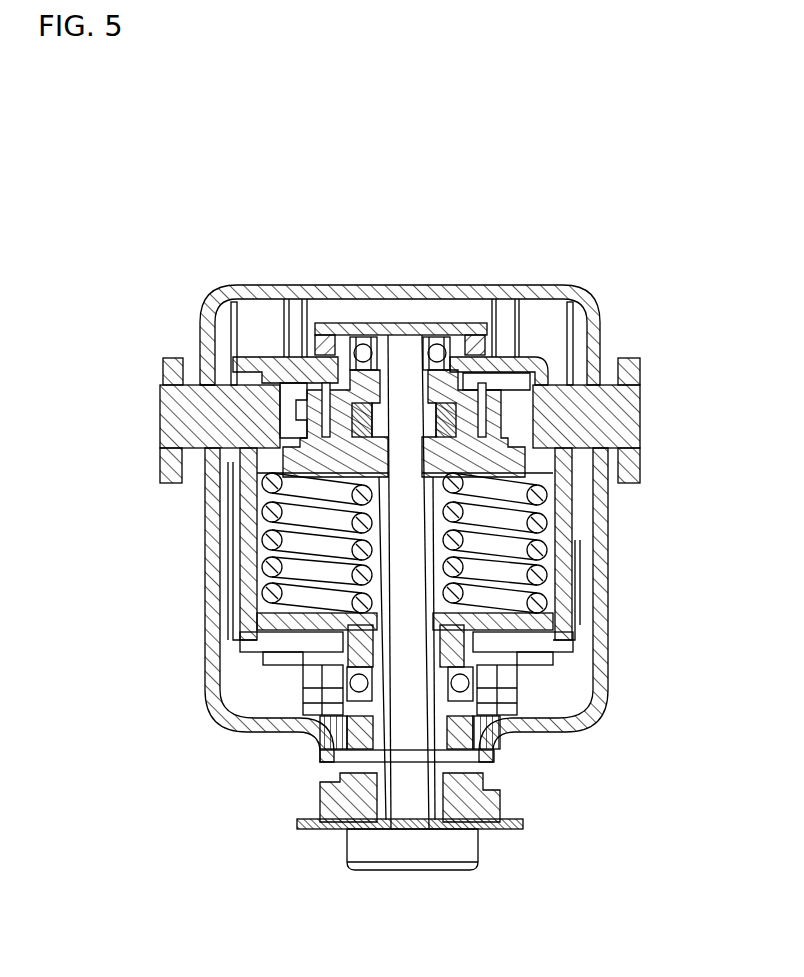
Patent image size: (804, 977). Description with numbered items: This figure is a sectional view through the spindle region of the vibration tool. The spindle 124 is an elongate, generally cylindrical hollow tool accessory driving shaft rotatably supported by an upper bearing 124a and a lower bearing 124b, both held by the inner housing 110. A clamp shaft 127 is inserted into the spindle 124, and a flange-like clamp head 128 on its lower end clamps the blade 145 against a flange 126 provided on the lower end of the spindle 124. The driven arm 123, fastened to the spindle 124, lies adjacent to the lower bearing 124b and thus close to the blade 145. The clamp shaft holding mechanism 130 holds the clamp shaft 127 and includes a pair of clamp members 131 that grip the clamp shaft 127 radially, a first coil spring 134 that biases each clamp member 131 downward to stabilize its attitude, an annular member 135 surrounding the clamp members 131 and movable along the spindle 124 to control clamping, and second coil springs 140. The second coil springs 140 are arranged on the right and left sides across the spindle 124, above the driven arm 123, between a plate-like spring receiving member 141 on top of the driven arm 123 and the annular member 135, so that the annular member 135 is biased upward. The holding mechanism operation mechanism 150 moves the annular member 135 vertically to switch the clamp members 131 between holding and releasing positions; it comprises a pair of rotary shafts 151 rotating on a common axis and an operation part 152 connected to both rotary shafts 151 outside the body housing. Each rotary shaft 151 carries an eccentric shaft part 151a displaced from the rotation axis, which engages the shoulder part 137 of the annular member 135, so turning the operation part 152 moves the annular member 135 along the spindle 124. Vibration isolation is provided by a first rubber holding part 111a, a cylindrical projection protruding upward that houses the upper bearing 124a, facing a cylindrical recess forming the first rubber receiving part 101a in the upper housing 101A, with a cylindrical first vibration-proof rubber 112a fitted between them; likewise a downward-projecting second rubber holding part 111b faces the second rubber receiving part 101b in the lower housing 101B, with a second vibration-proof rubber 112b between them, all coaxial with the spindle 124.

The upper housing 101A is at (585, 292).
The first rubber receiving part 101a is at (520, 331).
The lower housing 101B is at (603, 600).
The second rubber receiving part 101b is at (510, 724).
The inner housing 110 is at (567, 520).
The first rubber holding part 111a is at (437, 333).
The second rubber holding part 111b is at (505, 727).
The first vibration-proof rubber 112a is at (478, 338).
The second vibration-proof rubber 112b is at (312, 728).
The driven arm 123 is at (475, 660).
The spindle 124 is at (500, 792).
The upper bearing 124a is at (372, 337).
The lower bearing 124b is at (345, 680).
The flange 126 is at (322, 798).
The clamp shaft 127 is at (413, 770).
The clamp head 128 is at (373, 847).
The clamp shaft holding mechanism 130 is at (276, 337).
The clamp member 131 is at (333, 333).
The first coil spring 134 is at (403, 330).
The annular member 135 is at (243, 497).
The shoulder part 137 is at (245, 457).
The second coil spring 140 is at (255, 543).
The spring receiving member 141 is at (237, 612).
The blade 145 is at (298, 830).
The holding mechanism operation mechanism 150 is at (197, 349).
The rotary shaft 151 is at (175, 398).
The eccentric shaft part 151a is at (172, 428).
The operation part 152 is at (168, 367).